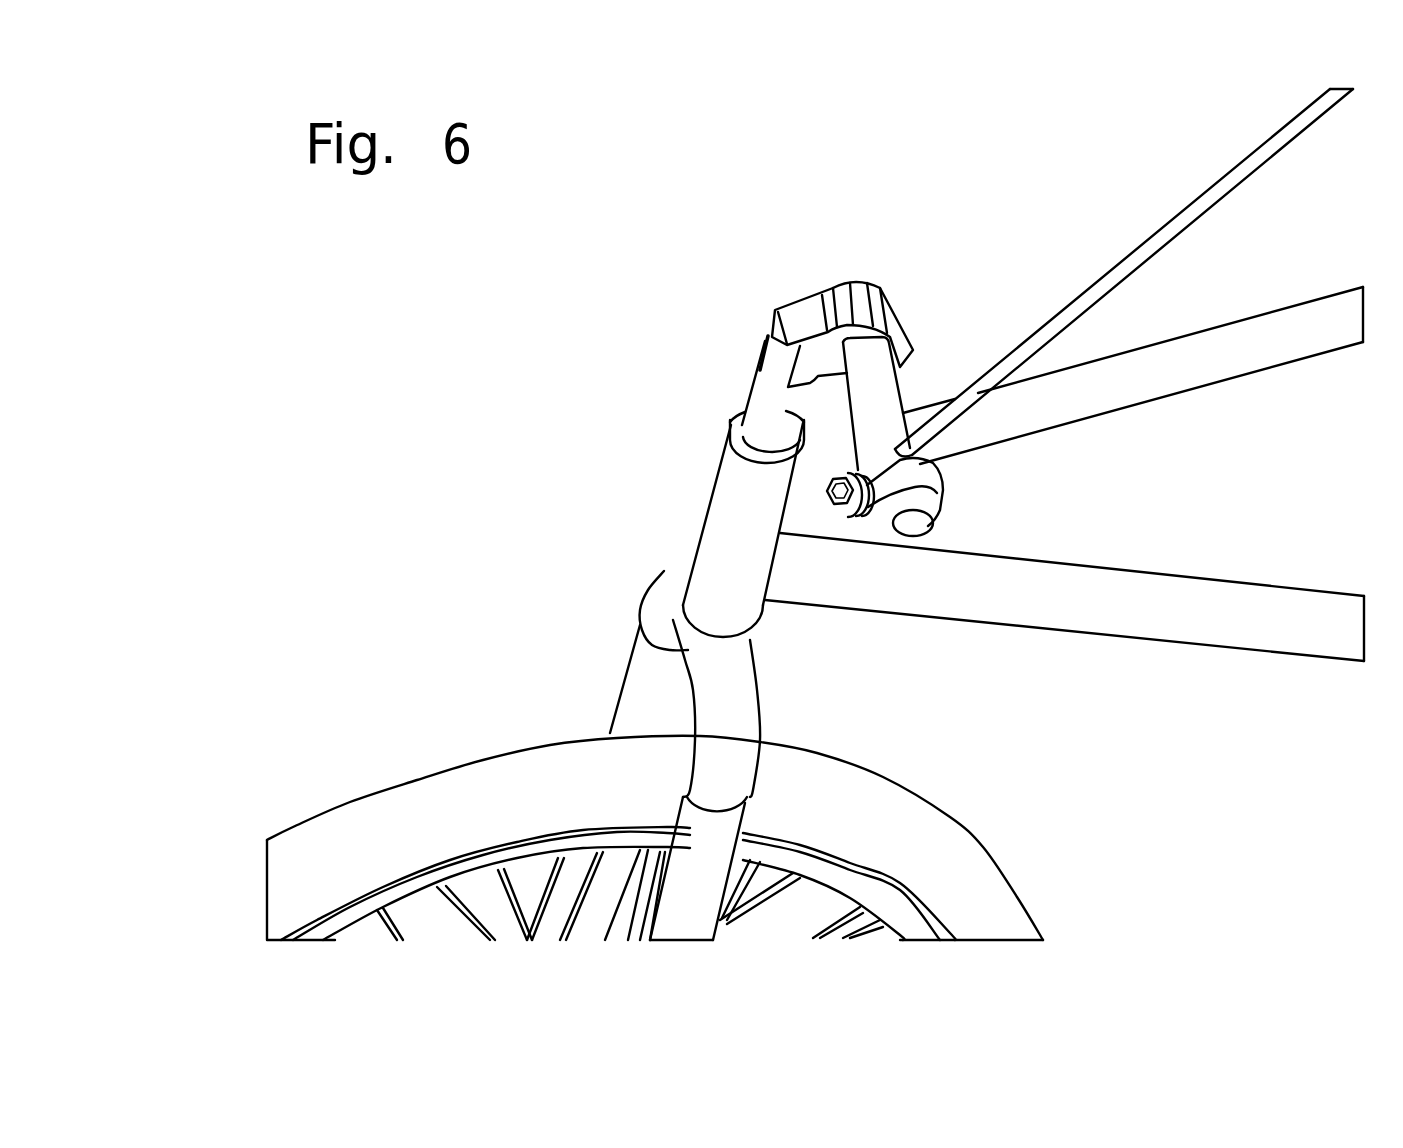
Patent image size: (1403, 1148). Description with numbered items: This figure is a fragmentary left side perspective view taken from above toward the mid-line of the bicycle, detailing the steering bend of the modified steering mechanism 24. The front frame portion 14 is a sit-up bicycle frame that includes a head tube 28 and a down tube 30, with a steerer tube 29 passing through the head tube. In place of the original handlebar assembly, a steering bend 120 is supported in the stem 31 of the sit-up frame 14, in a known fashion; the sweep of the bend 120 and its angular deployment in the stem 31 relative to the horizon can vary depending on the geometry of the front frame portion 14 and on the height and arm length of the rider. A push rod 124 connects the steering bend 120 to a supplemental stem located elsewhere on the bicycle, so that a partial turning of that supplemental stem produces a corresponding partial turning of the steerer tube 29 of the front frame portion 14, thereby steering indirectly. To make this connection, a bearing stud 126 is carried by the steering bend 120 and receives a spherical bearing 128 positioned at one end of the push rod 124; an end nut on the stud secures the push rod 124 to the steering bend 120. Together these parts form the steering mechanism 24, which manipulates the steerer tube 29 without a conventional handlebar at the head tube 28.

The front frame portion 14 is at (1087, 707).
The steering mechanism 24 is at (805, 262).
The head tube 28 is at (713, 485).
The steerer tube 29 is at (750, 398).
The down tube 30 is at (1143, 638).
The stem 31 is at (770, 338).
The steering bend 120 is at (912, 408).
The push rod 124 is at (1170, 218).
The bearing stud 126 is at (827, 492).
The spherical bearing 128 is at (852, 513).